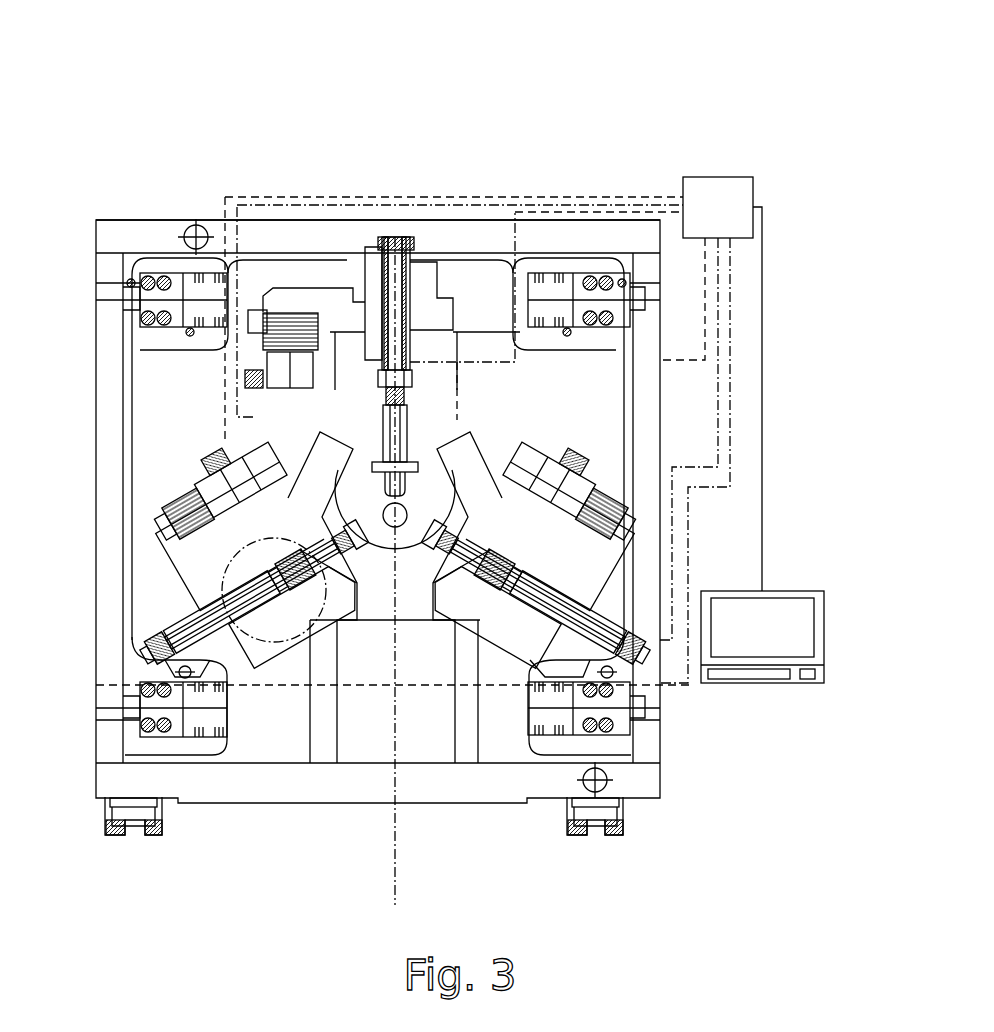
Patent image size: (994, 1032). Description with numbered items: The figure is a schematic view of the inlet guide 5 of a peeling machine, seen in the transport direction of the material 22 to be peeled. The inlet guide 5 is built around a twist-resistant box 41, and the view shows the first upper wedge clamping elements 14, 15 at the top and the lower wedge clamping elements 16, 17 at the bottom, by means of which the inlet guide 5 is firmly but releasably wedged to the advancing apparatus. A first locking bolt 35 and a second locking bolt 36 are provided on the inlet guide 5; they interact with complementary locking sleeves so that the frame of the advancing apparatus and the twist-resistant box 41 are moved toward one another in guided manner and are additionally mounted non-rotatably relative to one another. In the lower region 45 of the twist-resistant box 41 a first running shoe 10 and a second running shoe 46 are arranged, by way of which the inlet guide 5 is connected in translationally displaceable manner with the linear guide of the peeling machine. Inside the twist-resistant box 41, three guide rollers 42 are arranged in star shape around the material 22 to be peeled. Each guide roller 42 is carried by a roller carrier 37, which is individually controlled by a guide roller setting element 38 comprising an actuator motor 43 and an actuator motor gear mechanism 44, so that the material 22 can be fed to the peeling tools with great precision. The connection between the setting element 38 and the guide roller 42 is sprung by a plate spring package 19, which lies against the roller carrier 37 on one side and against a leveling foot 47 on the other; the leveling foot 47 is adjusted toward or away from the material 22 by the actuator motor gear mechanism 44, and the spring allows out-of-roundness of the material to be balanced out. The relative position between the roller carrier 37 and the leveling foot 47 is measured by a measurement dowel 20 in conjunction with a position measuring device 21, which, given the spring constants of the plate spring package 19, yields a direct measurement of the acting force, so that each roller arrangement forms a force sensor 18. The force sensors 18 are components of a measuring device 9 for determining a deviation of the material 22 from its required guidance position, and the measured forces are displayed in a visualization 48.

The inlet guide 5 is at (592, 94).
The measuring device 9 is at (716, 195).
The first running shoe 10 is at (562, 822).
The first upper wedge clamping element 14 is at (550, 273).
The first upper wedge clamping element 15 is at (217, 270).
The lower wedge clamping element 16 is at (540, 737).
The lower wedge clamping element 17 is at (218, 737).
The force sensor 18 is at (433, 321).
The plate spring package 19 is at (412, 395).
The measurement dowel 20 is at (412, 245).
The position measuring device 21 is at (380, 240).
The material to be peeled 22 is at (413, 560).
The first locking bolt 35 is at (183, 228).
The second locking bolt 36 is at (627, 797).
The roller carrier 37 is at (408, 420).
The guide roller setting element 38 is at (303, 276).
The twist-resistant box 41 is at (397, 235).
The guide roller 42 is at (390, 540).
The actuator motor 43 is at (268, 355).
The actuator motor gear mechanism 44 is at (257, 574).
The lower region 45 is at (698, 803).
The second running shoe 46 is at (153, 837).
The leveling foot 47 is at (412, 375).
The visualization 48 is at (780, 617).